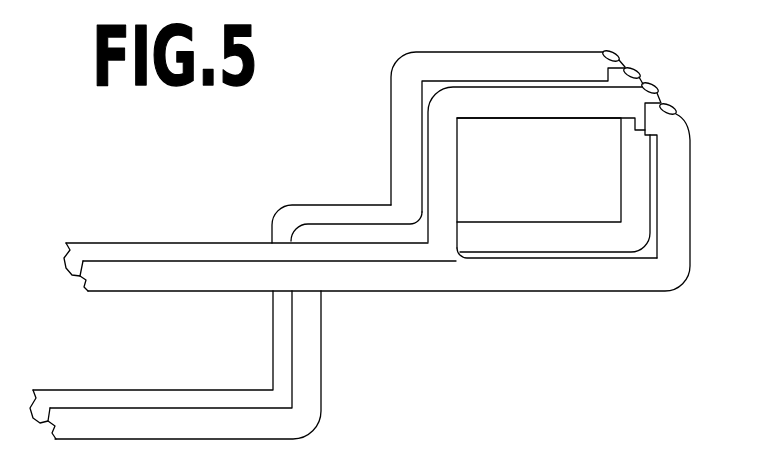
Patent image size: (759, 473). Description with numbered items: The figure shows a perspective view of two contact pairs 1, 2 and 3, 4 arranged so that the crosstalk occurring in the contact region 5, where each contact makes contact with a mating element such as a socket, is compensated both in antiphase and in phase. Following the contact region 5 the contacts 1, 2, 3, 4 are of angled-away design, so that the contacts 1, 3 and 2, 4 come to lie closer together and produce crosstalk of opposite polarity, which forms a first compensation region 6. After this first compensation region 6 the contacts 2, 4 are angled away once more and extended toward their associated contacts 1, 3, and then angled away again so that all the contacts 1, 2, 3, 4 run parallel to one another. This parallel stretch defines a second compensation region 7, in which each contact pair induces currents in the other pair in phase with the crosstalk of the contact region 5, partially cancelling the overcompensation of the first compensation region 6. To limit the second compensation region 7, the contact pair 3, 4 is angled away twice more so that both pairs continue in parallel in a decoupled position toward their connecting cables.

The contact 1 is at (677, 243).
The contact 2 is at (522, 101).
The contact 3 is at (640, 178).
The contact 4 is at (470, 60).
The contact region 5 is at (635, 70).
The first compensation region 6 is at (487, 167).
The second compensation region 7 is at (328, 240).